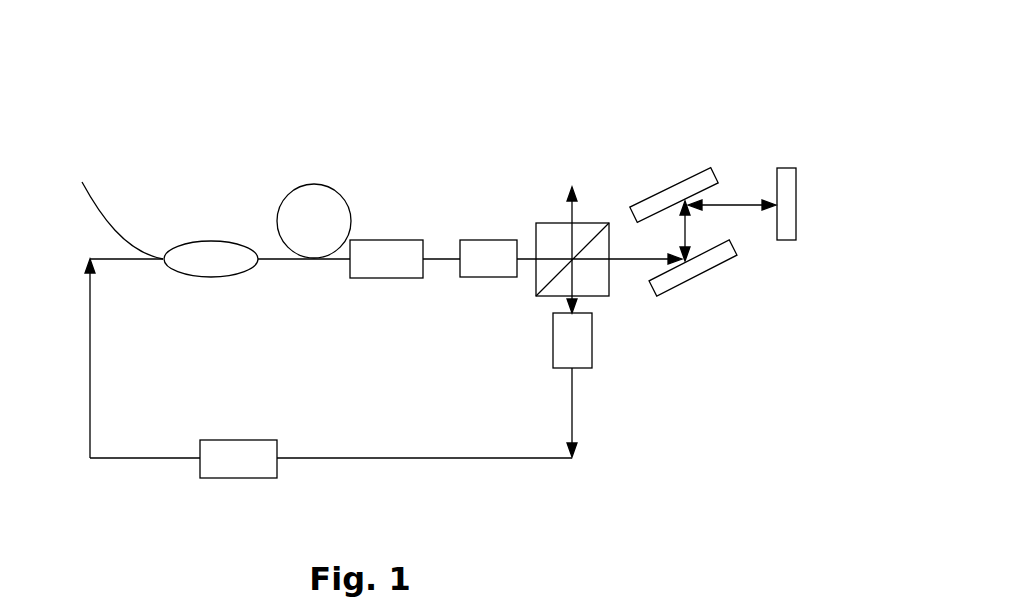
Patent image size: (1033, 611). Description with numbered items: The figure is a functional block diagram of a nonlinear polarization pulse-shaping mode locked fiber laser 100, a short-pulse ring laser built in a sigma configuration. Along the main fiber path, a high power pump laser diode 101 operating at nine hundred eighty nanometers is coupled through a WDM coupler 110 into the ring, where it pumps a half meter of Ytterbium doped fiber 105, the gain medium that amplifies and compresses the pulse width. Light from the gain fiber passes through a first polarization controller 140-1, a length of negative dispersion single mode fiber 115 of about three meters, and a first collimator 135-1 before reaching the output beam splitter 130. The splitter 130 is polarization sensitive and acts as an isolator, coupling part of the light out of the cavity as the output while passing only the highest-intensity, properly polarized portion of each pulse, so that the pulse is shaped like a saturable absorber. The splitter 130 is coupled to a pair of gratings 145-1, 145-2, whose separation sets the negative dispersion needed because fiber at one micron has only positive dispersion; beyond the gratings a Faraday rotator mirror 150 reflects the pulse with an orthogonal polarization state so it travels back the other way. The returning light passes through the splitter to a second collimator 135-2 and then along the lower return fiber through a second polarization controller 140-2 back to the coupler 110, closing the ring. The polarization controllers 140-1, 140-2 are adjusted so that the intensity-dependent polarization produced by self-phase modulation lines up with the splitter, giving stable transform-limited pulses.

The nonlinear polarization pulse-shaping mode locked fiber laser 100 is at (663, 52).
The 980 nm high power pump laser diode 101 is at (90, 193).
The Ytterbium doped fiber 105 is at (298, 205).
The 980/1550 WDM coupler 110 is at (222, 266).
The single mode fiber 115 is at (442, 257).
The output beam splitter 130 is at (545, 232).
The first collimator 135-1 is at (495, 253).
The second collimator 135-2 is at (570, 355).
The first polarization controller 140-1 is at (393, 263).
The second polarization controller 140-2 is at (245, 463).
The grating 145-1 is at (728, 254).
The grating 145-2 is at (697, 183).
The Faraday rotator mirror 150 is at (787, 212).